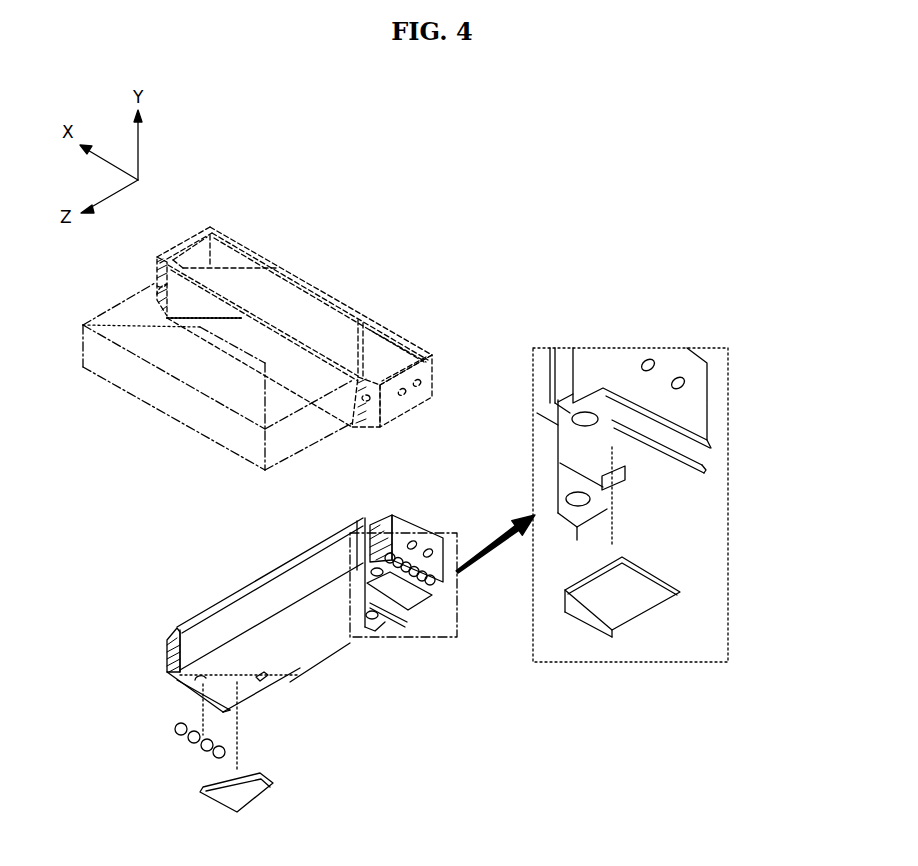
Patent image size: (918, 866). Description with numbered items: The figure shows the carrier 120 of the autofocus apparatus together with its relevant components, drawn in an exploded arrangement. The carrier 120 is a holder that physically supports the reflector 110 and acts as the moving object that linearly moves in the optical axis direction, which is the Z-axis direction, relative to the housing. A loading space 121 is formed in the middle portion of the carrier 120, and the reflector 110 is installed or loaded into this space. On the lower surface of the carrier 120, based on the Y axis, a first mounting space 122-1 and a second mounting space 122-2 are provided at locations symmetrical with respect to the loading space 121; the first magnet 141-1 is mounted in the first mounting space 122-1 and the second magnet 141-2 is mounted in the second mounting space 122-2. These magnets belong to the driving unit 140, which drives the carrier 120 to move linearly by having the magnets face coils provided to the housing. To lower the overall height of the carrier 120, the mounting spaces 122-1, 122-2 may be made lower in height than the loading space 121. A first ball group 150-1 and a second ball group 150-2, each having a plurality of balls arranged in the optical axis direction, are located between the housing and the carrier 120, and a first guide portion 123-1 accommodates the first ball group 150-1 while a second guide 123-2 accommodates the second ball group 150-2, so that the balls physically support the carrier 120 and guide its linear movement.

The reflector 110 is at (175, 405).
The carrier 120 is at (303, 290).
The loading space 121 is at (300, 378).
The first mounting space 122-1 is at (167, 667).
The second mounting space 122-2 is at (575, 438).
The first guide portion 123-1 is at (173, 690).
The second guide 123-2 is at (690, 450).
The driving unit 140 is at (440, 697).
The first magnet 141-1 is at (233, 787).
The second magnet 141-2 is at (606, 597).
The first ball group 150-1 is at (197, 748).
The second ball group 150-2 is at (443, 590).